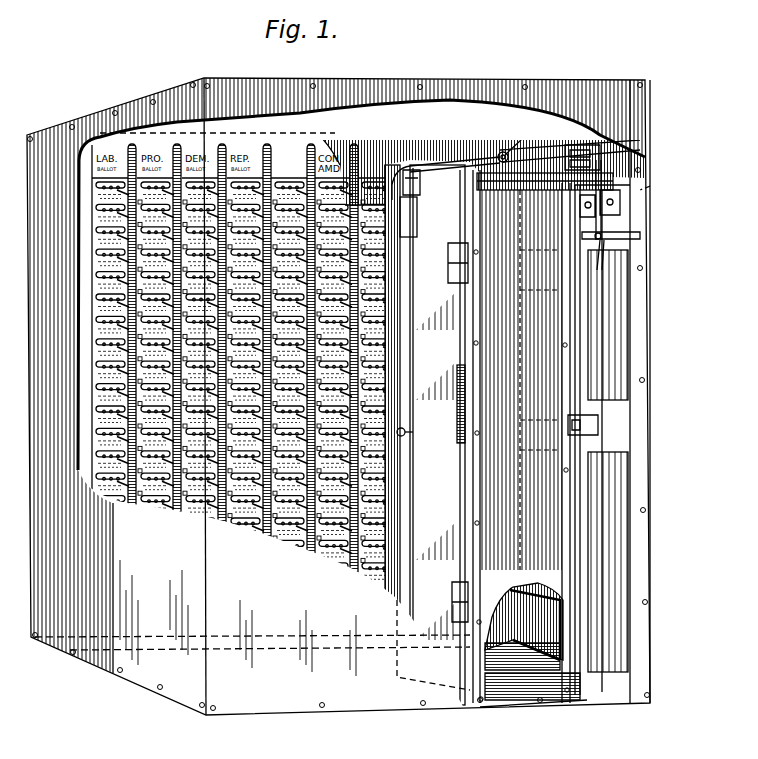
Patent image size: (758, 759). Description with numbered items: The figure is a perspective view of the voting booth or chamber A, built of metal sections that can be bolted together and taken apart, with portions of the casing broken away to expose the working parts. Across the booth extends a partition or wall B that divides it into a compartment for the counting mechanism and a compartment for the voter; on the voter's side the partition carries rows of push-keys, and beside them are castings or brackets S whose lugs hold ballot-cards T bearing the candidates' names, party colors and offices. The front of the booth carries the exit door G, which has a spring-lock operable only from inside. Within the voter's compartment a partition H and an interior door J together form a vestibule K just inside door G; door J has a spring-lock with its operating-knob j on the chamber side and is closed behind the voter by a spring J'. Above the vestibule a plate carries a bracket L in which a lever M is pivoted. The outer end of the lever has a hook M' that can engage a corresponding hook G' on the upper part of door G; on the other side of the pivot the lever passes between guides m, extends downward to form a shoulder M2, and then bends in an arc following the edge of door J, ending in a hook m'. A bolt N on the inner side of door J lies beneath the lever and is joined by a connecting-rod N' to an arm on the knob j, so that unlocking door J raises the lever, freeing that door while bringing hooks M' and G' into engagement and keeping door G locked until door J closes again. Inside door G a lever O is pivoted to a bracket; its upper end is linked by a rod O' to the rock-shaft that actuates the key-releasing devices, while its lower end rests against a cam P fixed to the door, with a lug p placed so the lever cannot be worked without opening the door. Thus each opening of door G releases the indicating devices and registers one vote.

The booth or chamber A is at (252, 596).
The partition or wall B is at (243, 360).
The casting or bracket S is at (238, 170).
The ballot-card T is at (252, 383).
The hook m' is at (349, 102).
The bracket L is at (530, 112).
The rod O' is at (554, 107).
The hook M' is at (584, 142).
The hook G' is at (617, 157).
The lever M is at (446, 178).
The guides m is at (420, 185).
The shoulder M2 is at (420, 190).
The bolt N is at (418, 217).
The connecting-rod N' is at (405, 435).
The lever O is at (668, 192).
The cam P is at (618, 237).
The lug or projection p is at (603, 255).
The interior door J is at (439, 435).
The operating-knob j is at (403, 436).
The spring J' is at (449, 416).
The partition H is at (543, 436).
The door G is at (599, 440).
The compartment or vestibule K is at (565, 700).